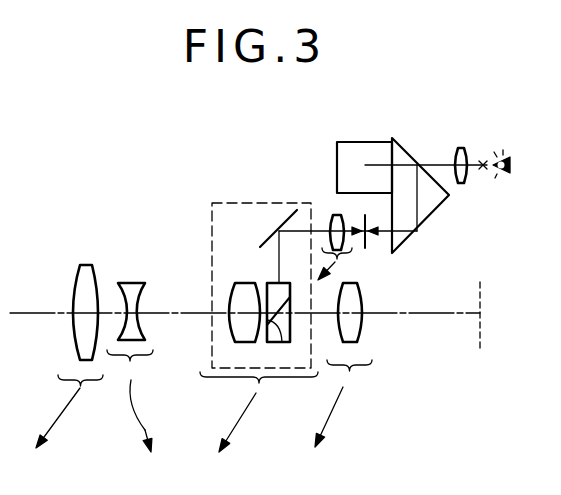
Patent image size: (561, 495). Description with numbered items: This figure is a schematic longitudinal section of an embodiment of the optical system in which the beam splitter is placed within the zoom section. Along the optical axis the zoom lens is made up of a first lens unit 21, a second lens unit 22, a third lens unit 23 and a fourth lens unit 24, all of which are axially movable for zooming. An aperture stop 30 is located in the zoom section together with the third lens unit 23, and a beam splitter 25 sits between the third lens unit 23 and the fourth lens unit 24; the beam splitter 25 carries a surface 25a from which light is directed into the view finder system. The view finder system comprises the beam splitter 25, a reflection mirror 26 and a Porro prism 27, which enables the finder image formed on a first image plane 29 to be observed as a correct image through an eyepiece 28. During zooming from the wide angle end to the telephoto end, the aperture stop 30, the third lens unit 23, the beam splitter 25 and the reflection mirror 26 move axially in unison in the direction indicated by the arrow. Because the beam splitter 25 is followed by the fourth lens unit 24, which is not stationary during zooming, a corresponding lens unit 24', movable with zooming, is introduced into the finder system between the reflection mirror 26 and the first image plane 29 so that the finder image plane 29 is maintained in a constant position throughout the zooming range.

The first lens unit 21 is at (90, 265).
The second lens unit 22 is at (136, 282).
The aperture stop 30 is at (223, 353).
The third lens unit 23 is at (249, 283).
The beam splitter 25 is at (285, 283).
The curved surface of prism 25a is at (281, 342).
The reflection mirror 26 is at (290, 206).
The lens unit 24' is at (324, 224).
The first image plane 29 is at (365, 248).
The Porro prism 27 is at (370, 142).
The eyepiece 28 is at (460, 148).
The fourth lens unit 24 is at (362, 365).